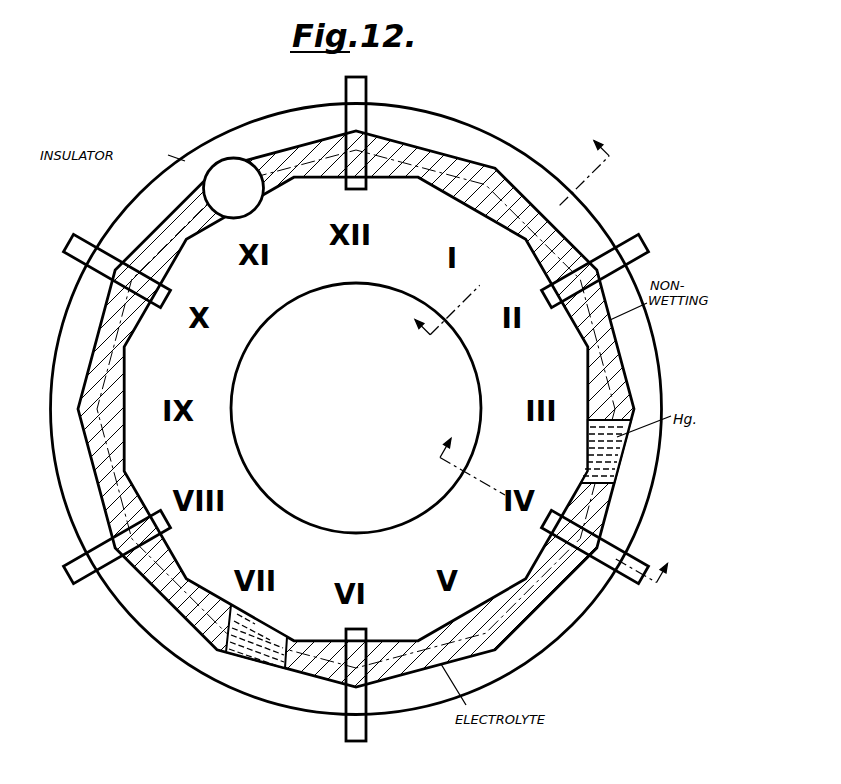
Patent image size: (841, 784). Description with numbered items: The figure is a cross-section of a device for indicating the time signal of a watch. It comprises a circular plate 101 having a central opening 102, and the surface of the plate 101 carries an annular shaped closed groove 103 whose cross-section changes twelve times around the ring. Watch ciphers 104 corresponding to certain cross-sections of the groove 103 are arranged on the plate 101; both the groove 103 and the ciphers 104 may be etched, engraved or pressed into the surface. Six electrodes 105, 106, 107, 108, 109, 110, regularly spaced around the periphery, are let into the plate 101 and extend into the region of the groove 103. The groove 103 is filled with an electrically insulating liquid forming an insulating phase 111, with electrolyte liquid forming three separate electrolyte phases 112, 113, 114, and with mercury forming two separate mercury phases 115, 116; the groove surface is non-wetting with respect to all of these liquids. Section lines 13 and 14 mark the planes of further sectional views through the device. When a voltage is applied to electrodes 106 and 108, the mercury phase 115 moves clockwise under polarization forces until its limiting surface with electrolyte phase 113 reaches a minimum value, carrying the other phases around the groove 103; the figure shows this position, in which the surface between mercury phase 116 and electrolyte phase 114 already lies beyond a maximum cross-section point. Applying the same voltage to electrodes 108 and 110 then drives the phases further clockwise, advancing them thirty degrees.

The circular plate 101 is at (643, 345).
The central opening 102 is at (366, 453).
The annular shaped closed groove 103 is at (560, 241).
The watch ciphers 104 is at (342, 243).
The electrode 105 is at (363, 90).
The electrode 106 is at (636, 252).
The electrode 107 is at (630, 570).
The electrode 108 is at (364, 738).
The electrode 109 is at (73, 571).
The electrode 110 is at (84, 244).
The insulating phase 111 is at (218, 176).
The electrolyte phase 112 is at (498, 190).
The electrolyte phase 113 is at (512, 632).
The electrolyte phase 114 is at (92, 390).
The mercury phase 115 is at (617, 457).
The mercury phase 116 is at (248, 664).
The section line 13- 13 is at (520, 252).
The section line 14- 14 is at (543, 529).